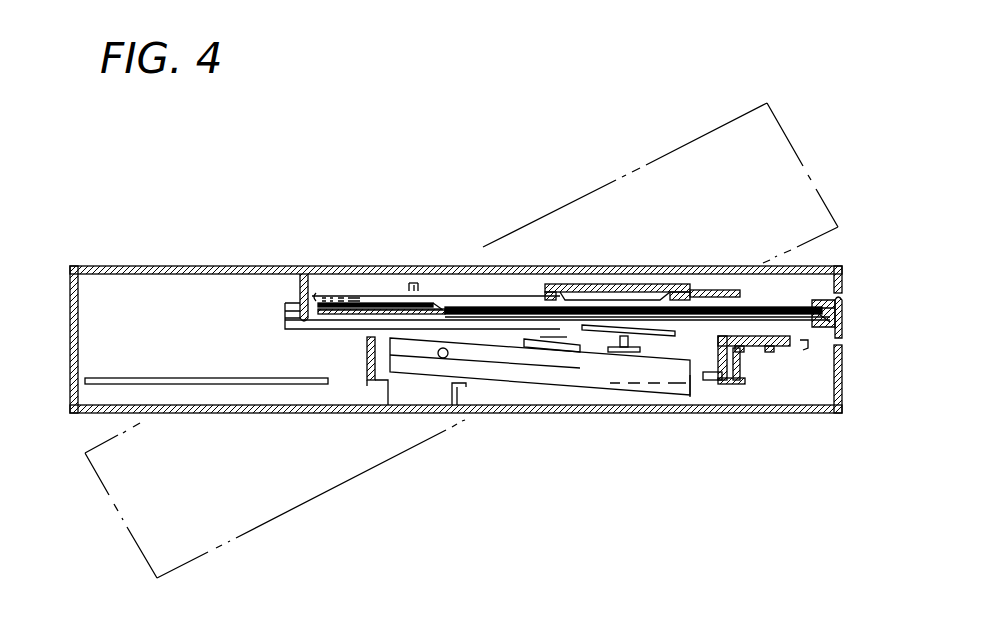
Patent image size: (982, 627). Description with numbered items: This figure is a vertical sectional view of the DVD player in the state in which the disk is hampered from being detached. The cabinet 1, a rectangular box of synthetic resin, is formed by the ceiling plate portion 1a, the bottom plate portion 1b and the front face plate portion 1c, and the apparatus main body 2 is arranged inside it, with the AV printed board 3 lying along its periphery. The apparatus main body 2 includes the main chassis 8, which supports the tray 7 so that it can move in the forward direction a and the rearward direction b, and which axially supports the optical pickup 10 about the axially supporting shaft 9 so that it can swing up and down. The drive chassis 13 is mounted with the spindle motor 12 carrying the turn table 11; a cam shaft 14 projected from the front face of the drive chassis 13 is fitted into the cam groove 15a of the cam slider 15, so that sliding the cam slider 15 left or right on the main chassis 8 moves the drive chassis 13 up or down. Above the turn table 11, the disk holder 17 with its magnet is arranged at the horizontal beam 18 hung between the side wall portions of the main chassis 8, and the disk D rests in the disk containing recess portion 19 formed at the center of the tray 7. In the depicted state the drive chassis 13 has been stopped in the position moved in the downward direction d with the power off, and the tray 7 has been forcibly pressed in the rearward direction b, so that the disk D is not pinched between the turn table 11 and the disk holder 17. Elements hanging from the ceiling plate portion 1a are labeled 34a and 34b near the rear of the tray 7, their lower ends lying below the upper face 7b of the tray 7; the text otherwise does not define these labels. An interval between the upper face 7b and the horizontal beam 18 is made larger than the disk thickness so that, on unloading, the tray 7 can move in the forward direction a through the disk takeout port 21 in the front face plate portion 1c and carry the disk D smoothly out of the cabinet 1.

The cabinet 1 is at (462, 329).
The ceiling plate portion 1a is at (137, 266).
The bottom plate portion 1b is at (250, 414).
The front face plate portion 1c is at (843, 386).
The apparatus main body 2 is at (260, 298).
The AV printed board 3 is at (148, 377).
The tray 7 is at (517, 298).
The upper face of the tray 7b is at (385, 303).
The main chassis 8 is at (350, 352).
The axially supporting shaft 9 is at (443, 358).
The optical pickup 10 is at (536, 352).
The turn table 11 is at (558, 352).
The spindle motor 12 is at (604, 353).
The drive chassis 13 is at (687, 396).
The cam shaft 14 is at (702, 381).
The cam slider 15 is at (725, 385).
The cam groove 15a is at (797, 350).
The disk holder 17 is at (630, 284).
The horizontal beam 18 is at (545, 284).
The disk containing recess portion 19 is at (816, 300).
The disk takeout port 21 is at (843, 298).
The stopper 34a is at (412, 283).
The stopper post 34b is at (304, 272).
The disk D is at (736, 307).
The downward direction d is at (472, 392).
The forward direction a is at (448, 537).
The rearward direction b is at (448, 537).